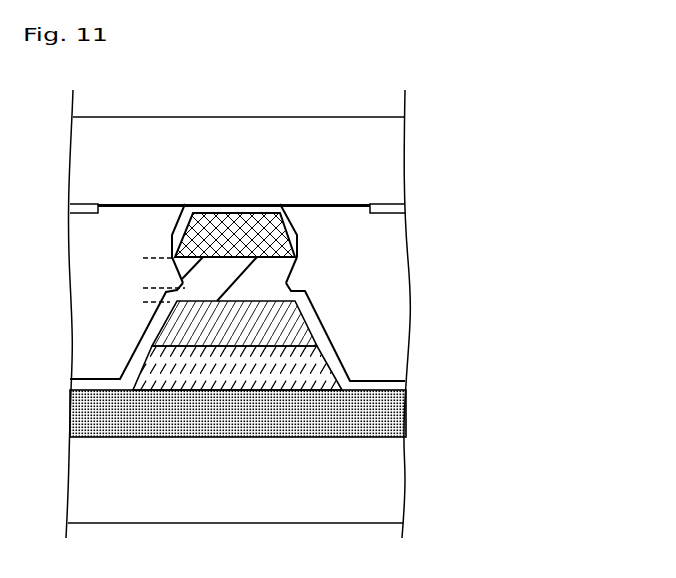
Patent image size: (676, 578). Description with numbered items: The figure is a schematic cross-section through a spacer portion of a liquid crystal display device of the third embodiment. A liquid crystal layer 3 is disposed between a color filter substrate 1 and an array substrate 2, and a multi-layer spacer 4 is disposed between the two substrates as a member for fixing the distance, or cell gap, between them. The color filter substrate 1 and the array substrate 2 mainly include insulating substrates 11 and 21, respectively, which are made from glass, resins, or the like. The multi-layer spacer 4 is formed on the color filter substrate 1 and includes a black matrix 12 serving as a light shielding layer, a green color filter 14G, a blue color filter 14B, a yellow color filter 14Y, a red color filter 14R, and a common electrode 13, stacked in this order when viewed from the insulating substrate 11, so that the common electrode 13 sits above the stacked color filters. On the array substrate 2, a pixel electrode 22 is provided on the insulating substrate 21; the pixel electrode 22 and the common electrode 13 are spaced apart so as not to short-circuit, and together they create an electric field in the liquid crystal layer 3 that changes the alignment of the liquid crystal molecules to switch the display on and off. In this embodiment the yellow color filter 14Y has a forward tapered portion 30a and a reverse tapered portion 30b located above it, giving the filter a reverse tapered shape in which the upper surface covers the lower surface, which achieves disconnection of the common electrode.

The color filter substrate 1 is at (55, 380).
The array substrate 2 is at (55, 117).
The liquid crystal layer 3 is at (55, 214).
The multi-layer spacer 4 is at (498, 217).
The insulating substrate 11 is at (398, 483).
The black matrix 12 is at (398, 410).
The common electrode 13 is at (285, 215).
The red color filter 14R is at (290, 236).
The yellow color filter 14Y is at (278, 274).
The blue color filter 14B is at (302, 328).
The green color filter 14G is at (312, 370).
The insulating substrate 21 is at (397, 163).
The pixel electrode 22 is at (393, 208).
The forward tapered portion 30a is at (140, 288).
The reverse tapered portion 30b is at (140, 258).